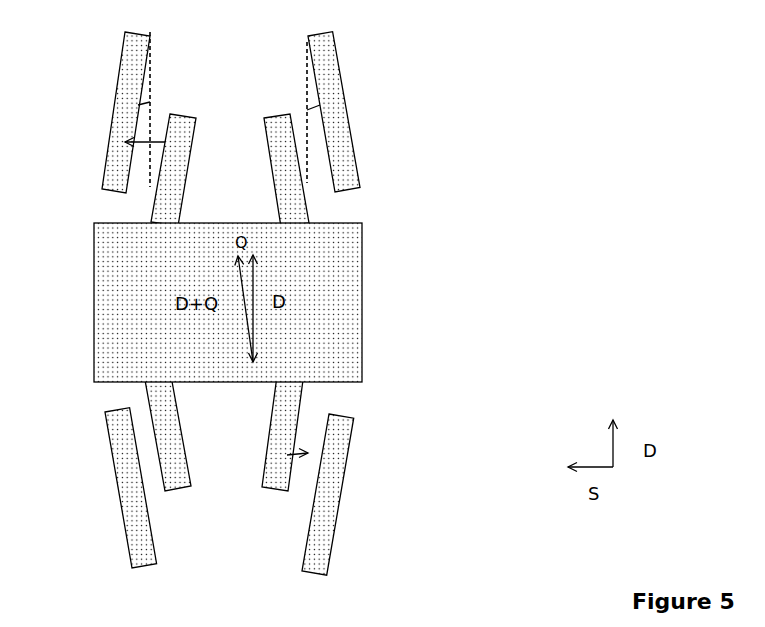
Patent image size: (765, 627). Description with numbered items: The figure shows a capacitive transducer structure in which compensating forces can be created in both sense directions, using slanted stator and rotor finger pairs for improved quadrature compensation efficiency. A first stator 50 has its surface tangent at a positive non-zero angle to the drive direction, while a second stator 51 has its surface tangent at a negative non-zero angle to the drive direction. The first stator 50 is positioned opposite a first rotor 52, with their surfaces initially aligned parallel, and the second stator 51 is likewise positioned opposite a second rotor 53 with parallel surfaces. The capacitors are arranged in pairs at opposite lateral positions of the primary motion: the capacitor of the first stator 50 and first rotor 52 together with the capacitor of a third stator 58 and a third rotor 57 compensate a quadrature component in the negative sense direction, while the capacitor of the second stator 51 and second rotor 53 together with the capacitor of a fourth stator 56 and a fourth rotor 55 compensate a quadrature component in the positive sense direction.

The first stator 50 is at (352, 130).
The second stator 51 is at (108, 150).
The first rotor 52 is at (267, 120).
The second rotor 53 is at (173, 112).
The fourth rotor 55 is at (277, 490).
The fourth stator 56 is at (338, 512).
The third rotor 57 is at (177, 491).
The third stator 58 is at (117, 493).